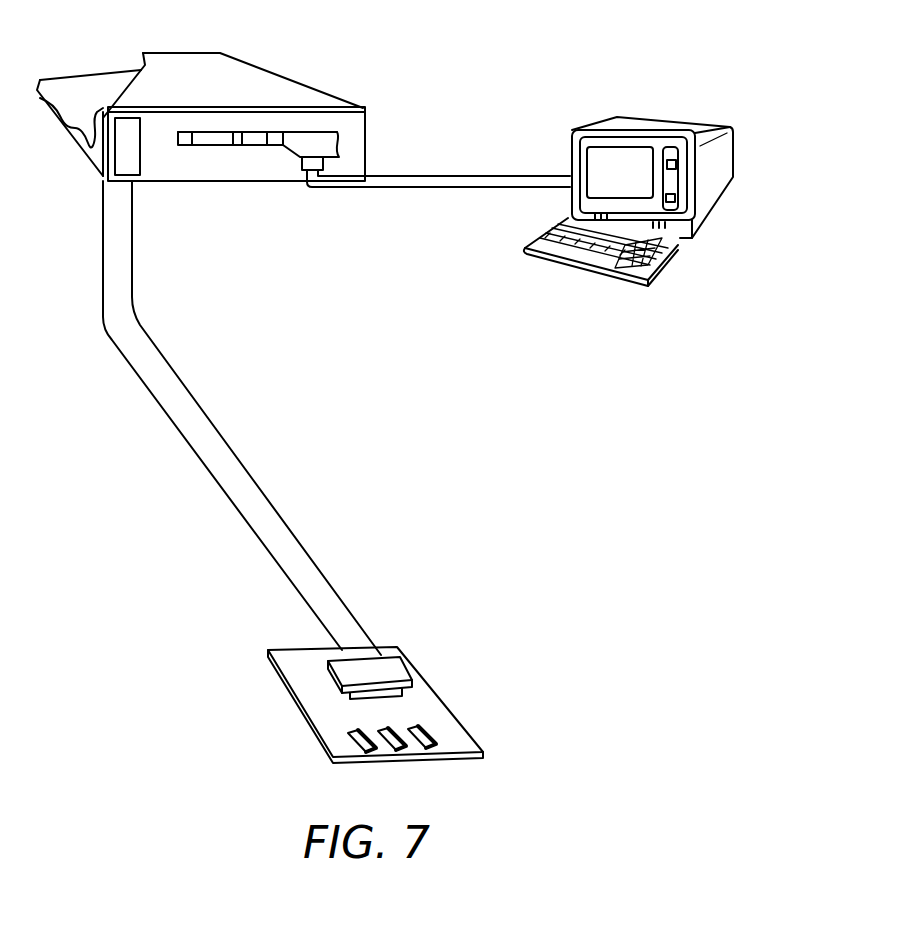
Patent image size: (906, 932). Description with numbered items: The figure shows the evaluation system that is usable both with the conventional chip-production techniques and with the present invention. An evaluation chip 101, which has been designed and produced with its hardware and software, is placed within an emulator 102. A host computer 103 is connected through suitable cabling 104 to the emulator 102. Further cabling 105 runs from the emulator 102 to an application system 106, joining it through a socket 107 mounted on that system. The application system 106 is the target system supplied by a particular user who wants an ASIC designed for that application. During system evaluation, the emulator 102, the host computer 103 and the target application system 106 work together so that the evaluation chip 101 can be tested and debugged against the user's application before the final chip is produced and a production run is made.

The evaluation chip 101 is at (89, 123).
The emulator 102 is at (234, 117).
The host computer 103 is at (717, 163).
The cabling 104 is at (430, 173).
The further cabling 105 is at (120, 280).
The application system 106 is at (432, 703).
The socket 107 is at (383, 670).